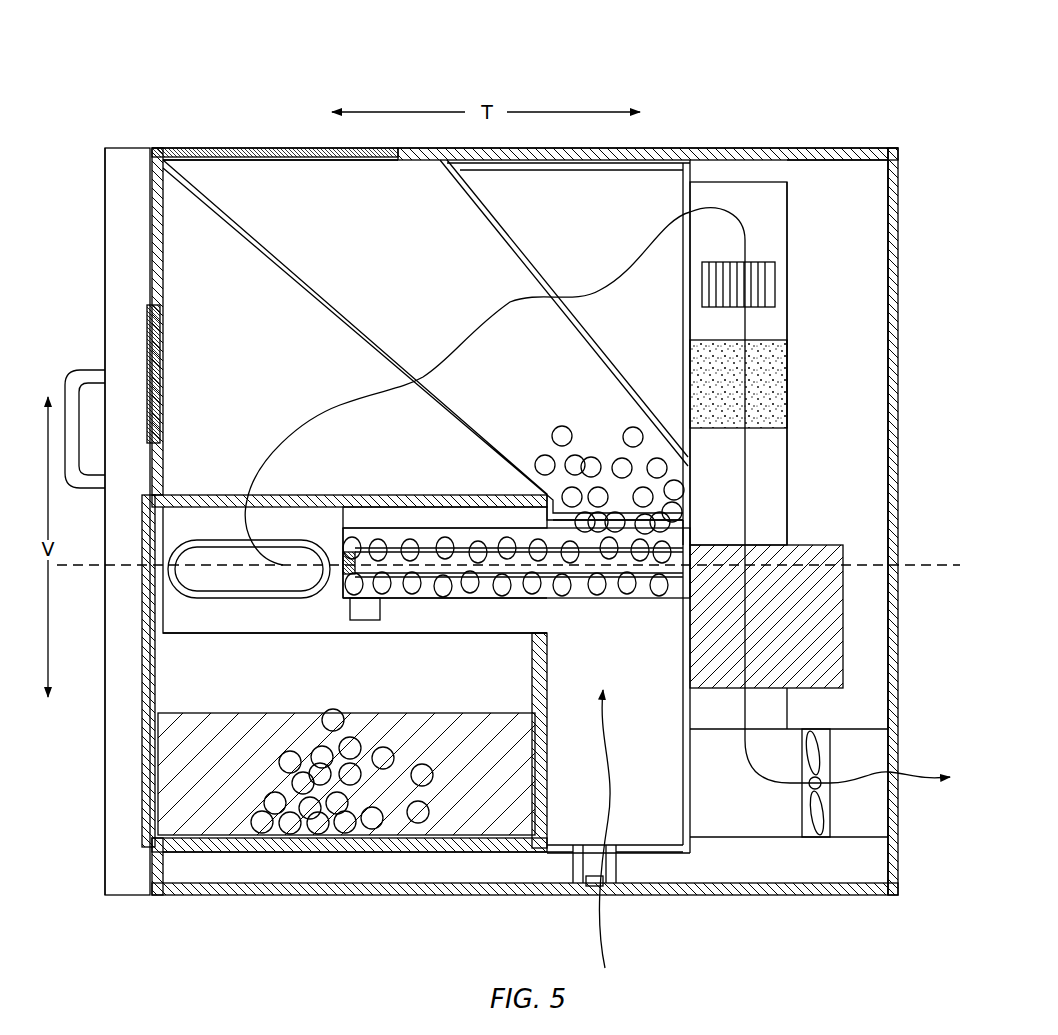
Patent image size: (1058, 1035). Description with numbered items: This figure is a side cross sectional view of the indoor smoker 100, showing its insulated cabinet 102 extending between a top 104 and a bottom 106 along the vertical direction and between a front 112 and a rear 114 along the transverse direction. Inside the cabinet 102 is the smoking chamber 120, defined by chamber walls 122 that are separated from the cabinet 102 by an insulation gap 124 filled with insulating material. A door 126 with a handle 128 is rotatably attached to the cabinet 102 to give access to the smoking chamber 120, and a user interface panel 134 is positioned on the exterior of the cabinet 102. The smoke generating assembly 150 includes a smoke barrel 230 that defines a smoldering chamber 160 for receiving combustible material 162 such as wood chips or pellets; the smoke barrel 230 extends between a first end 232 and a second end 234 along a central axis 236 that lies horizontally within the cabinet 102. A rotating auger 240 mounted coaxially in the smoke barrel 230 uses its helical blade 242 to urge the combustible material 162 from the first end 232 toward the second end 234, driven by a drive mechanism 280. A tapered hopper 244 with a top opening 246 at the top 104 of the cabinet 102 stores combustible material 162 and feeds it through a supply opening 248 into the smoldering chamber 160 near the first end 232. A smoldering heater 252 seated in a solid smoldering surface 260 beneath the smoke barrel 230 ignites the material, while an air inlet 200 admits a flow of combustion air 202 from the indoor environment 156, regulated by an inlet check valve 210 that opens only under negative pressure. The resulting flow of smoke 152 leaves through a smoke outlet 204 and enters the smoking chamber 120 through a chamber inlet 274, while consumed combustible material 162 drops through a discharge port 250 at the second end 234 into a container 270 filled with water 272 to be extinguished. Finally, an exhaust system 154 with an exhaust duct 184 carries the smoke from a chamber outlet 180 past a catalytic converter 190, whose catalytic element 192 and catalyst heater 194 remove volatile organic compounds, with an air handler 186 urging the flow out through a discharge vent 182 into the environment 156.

The indoor smoker 100 is at (144, 93).
The cabinet 102 is at (898, 290).
The top 104 is at (222, 148).
The bottom 106 is at (185, 895).
The front 112 is at (104, 160).
The rear 114 is at (900, 200).
The smoking chamber 120 is at (212, 293).
The chamber walls 122 is at (650, 168).
The insulation gap 124 is at (835, 190).
The door 126 is at (125, 250).
The handle 128 is at (85, 372).
The user interface panel 134 is at (165, 378).
The smoke generating assembly 150 is at (445, 518).
The flow of smoke 152 is at (448, 355).
The exhaust system 154 is at (778, 180).
The indoor environment 156 is at (926, 624).
The smoldering chamber 160 is at (488, 537).
The combustible material 162 is at (560, 426).
The chamber outlet 180 is at (686, 212).
The discharge vent 182 is at (902, 822).
The exhaust duct 184 is at (787, 245).
The air handler 186 is at (843, 840).
The catalytic converter 190 is at (806, 267).
The catalytic element 192 is at (710, 375).
The catalyst heater 194 is at (720, 285).
The air inlet 200 is at (568, 877).
The flow of combustion air 202 is at (608, 745).
The smoke outlet 204 is at (335, 533).
The inlet check valve 210 is at (606, 886).
The smoke barrel 230 is at (378, 528).
The first end 232 is at (694, 533).
The second end 234 is at (343, 508).
The central axis 236 is at (918, 565).
The rotating auger 240 is at (455, 590).
The helical blade 242 is at (503, 598).
The hopper 244 is at (505, 253).
The top opening 246 is at (300, 148).
The supply opening 248 is at (620, 508).
The discharge port 250 is at (333, 598).
The smoldering heater 252 is at (368, 615).
The smoldering surface 260 is at (352, 605).
The container 270 is at (445, 835).
The water 272 is at (193, 780).
The chamber inlet 274 is at (200, 585).
The drive mechanism 280 is at (835, 660).